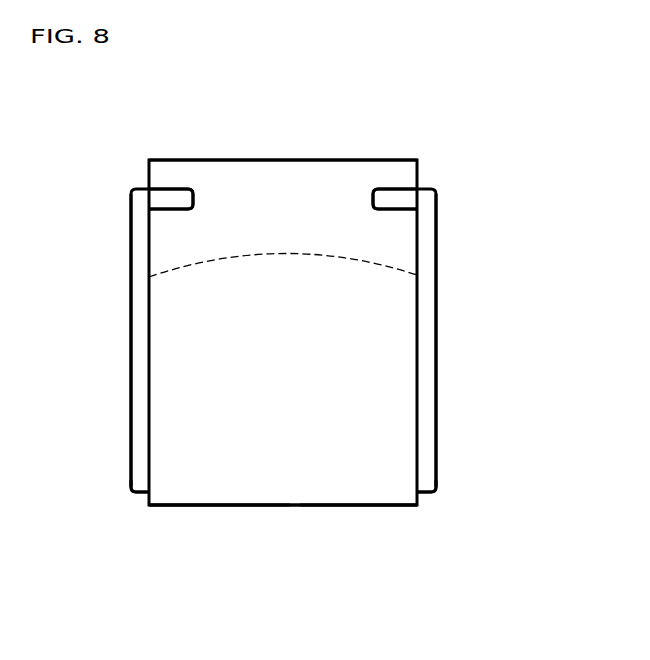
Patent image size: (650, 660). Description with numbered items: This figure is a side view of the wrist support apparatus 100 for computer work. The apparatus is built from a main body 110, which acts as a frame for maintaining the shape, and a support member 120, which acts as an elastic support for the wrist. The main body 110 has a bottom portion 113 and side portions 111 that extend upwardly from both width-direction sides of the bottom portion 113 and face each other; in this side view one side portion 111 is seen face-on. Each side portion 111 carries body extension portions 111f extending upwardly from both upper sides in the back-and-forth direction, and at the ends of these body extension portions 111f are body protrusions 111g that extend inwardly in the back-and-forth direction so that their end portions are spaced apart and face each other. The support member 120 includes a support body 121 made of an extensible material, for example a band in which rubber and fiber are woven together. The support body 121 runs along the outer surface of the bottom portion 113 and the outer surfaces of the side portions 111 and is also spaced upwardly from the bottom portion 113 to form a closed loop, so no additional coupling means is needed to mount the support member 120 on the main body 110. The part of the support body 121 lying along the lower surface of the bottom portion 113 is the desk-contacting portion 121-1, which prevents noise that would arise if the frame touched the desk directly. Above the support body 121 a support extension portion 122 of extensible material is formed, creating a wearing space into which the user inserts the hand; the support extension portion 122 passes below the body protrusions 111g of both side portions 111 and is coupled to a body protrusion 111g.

The wrist support apparatus 100 is at (150, 97).
The main body 110 is at (368, 144).
The side portion 111 is at (137, 398).
The body extension portion 111f is at (136, 250).
The body protrusion 111g is at (176, 193).
The bottom portion 113 is at (140, 492).
The support member 120 is at (273, 540).
The support body 121 is at (205, 515).
The desk-contacting portion of support body 121-1 is at (355, 505).
The support extension portion 122 is at (273, 170).